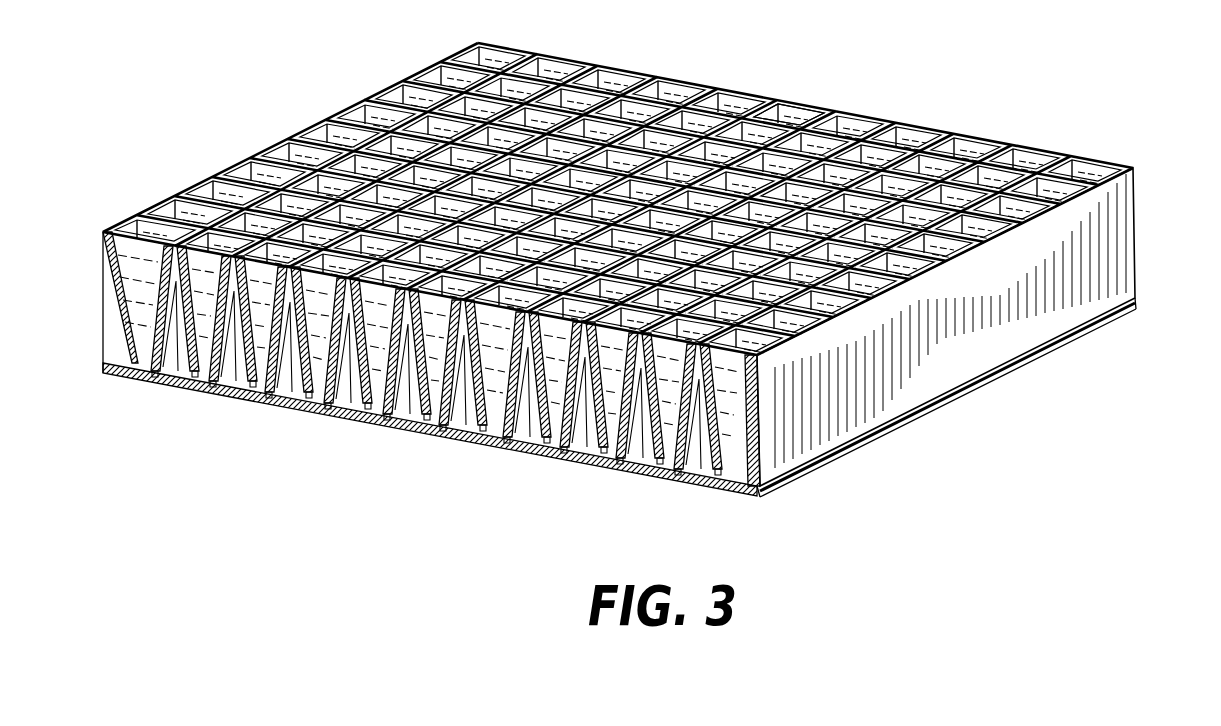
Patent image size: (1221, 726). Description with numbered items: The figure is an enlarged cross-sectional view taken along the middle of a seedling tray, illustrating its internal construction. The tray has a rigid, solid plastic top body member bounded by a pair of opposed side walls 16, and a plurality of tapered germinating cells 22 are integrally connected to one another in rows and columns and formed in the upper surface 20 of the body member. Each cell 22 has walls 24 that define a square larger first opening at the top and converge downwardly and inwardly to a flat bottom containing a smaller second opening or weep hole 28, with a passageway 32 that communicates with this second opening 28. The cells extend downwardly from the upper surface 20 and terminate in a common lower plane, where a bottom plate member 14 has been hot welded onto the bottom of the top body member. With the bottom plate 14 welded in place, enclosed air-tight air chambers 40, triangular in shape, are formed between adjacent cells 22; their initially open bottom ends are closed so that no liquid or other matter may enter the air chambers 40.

The bottom plate member 14 is at (930, 408).
The side walls 16 is at (1108, 237).
The upper surface 20 is at (883, 123).
The tapered germinating cells 22 is at (783, 120).
The walls 24 is at (737, 408).
The second opening or weep hole 28 is at (396, 425).
The passageway 32 is at (548, 458).
The air chambers 40 is at (342, 413).